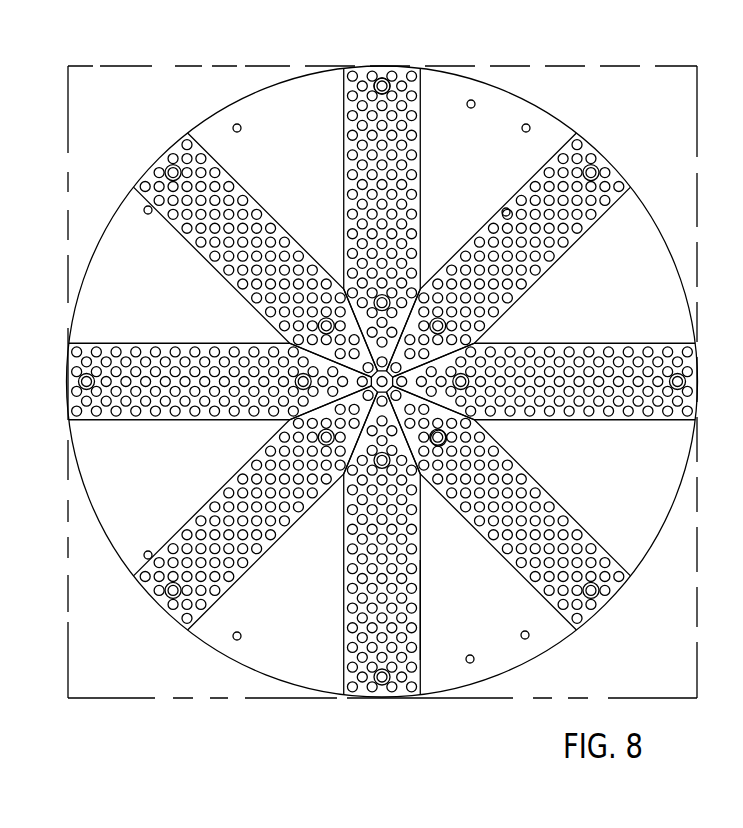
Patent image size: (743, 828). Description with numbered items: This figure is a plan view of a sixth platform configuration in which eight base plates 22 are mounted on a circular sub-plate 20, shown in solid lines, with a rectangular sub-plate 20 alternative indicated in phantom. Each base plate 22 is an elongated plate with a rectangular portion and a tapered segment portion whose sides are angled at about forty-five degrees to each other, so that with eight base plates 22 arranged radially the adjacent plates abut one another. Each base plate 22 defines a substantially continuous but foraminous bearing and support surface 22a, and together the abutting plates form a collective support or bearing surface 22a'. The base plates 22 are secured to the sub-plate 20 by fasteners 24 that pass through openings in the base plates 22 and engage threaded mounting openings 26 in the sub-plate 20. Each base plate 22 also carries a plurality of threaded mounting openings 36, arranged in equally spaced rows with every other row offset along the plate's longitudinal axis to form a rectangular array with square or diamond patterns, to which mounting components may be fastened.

The sub-plate 20 is at (277, 677).
The base plate 22 is at (247, 190).
The bearing and support surface 22a is at (451, 610).
The collective support or bearing surface 22a' is at (495, 445).
The fastener 24 is at (379, 78).
The threaded mounting opening 26 is at (237, 124).
The threaded mounting opening 36 is at (504, 208).